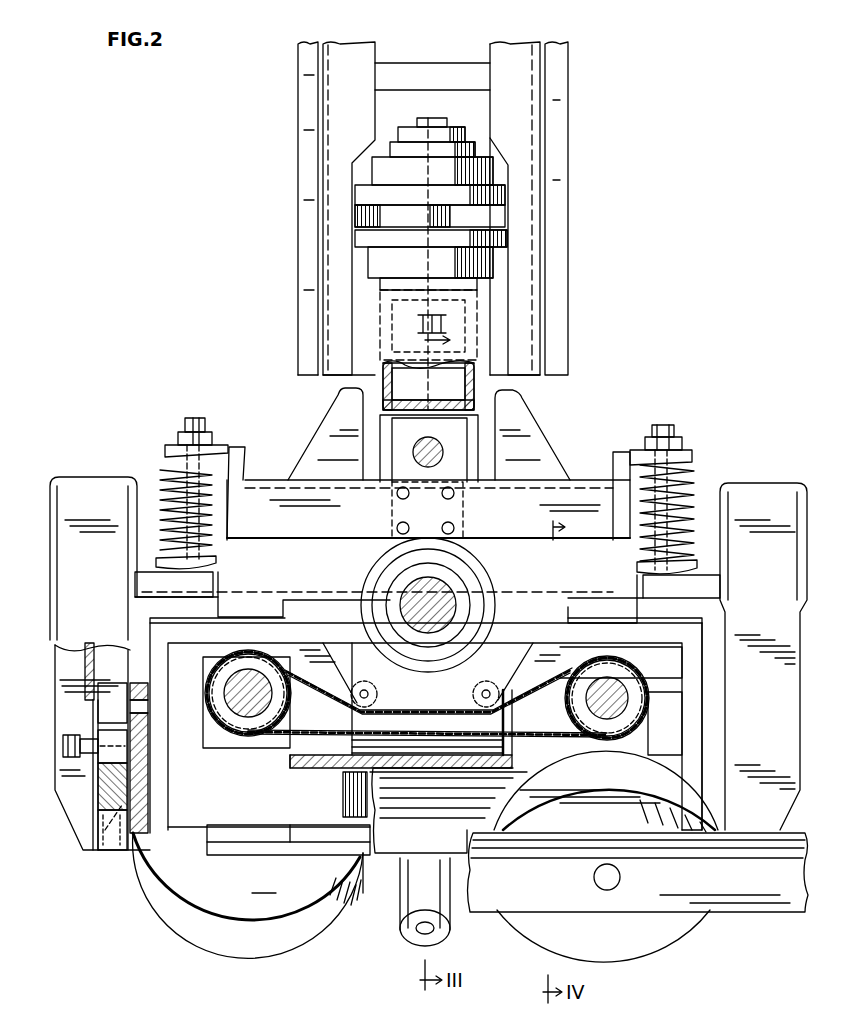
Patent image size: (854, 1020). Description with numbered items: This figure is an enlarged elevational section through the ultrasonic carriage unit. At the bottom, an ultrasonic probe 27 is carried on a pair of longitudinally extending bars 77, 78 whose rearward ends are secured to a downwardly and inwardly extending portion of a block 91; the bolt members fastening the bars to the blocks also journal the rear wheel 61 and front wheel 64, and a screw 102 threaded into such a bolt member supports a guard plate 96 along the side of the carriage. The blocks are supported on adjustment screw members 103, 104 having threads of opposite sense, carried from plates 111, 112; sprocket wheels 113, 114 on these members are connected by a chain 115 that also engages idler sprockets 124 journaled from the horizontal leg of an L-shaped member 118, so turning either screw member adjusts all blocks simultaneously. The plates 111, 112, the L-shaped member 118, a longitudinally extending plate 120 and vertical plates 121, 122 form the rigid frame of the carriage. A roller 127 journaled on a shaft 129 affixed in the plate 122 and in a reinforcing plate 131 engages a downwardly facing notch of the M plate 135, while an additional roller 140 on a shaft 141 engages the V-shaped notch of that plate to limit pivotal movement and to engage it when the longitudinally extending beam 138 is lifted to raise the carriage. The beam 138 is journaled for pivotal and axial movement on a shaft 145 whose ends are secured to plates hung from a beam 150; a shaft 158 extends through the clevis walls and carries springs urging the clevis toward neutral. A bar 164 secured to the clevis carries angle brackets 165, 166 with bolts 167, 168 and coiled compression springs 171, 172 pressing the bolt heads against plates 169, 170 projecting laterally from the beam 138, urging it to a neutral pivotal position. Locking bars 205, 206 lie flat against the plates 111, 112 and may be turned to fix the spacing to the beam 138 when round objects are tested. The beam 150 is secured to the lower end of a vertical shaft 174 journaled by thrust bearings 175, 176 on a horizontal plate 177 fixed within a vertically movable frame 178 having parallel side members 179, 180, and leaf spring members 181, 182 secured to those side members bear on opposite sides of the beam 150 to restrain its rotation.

The vertical side member 179 is at (318, 113).
The vertically movable frame 178 is at (566, 100).
The vertical side member 180 is at (558, 135).
The leaf spring member 182 is at (498, 373).
The thrust bearing 175 is at (495, 185).
The horizontal plate 177 is at (497, 222).
The thrust bearing 176 is at (497, 255).
The vertical shaft 174 is at (395, 322).
The leaf spring member 181 is at (383, 372).
The beam 150 is at (386, 392).
The shaft 158 is at (440, 460).
The longitudinally extending bar 164 is at (335, 530).
The angle bracket 165 is at (268, 447).
The angle bracket 166 is at (622, 450).
The coiled compression spring 171 is at (218, 460).
The coiled compression spring 172 is at (685, 470).
The bolt 167 is at (170, 468).
The bolt 168 is at (682, 492).
The longitudinally extending beam 138 is at (140, 480).
The plate 169 is at (140, 572).
The plate 170 is at (700, 584).
The locking bar 206 is at (258, 605).
The locking bar 205 is at (597, 605).
The rearward plate 112 is at (278, 625).
The plate 111 is at (642, 640).
The shaft 145 is at (440, 610).
The vertical plate 122 is at (158, 708).
The vertical plate 121 is at (695, 697).
The adjustment screw member 103 is at (258, 735).
The sprocket wheel 113 is at (245, 718).
The sprocket wheel 114 is at (630, 713).
The chain 115 is at (318, 688).
The adjustment screw member 104 is at (595, 720).
The idler sprocket 124 is at (476, 690).
The L-shaped member 118 is at (308, 768).
The M plate 135 is at (85, 655).
The shaft 141 is at (95, 686).
The roller 140 is at (105, 710).
The reinforcing plate 131 is at (137, 830).
The shaft 129 is at (105, 828).
The roller 127 is at (112, 850).
The block 91 is at (222, 840).
The rear wheel 61 is at (264, 883).
The bar 77 is at (335, 908).
The longitudinally extending plate 120 is at (328, 828).
The bar 78 is at (400, 858).
The ultrasonic probe 27 is at (447, 920).
The front wheel 64 is at (688, 930).
The guard plate 96 is at (755, 915).
The screw 102 is at (596, 877).